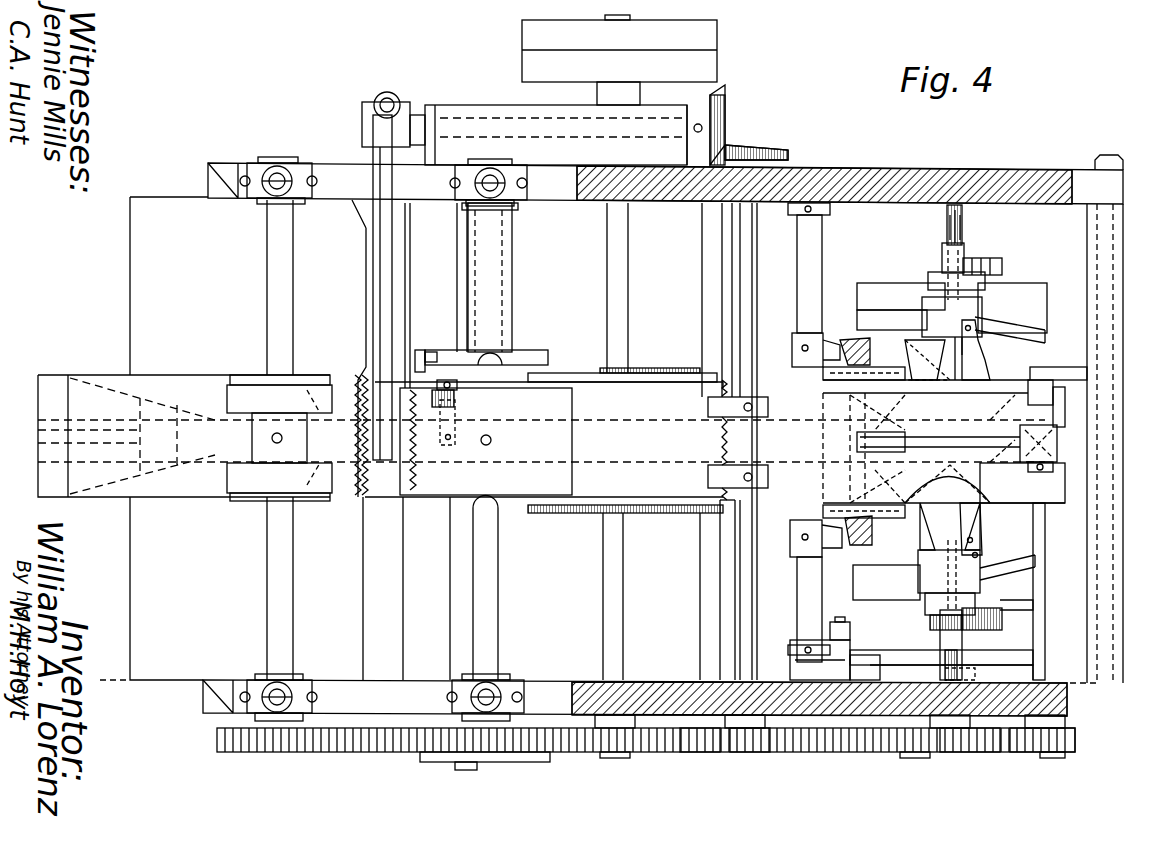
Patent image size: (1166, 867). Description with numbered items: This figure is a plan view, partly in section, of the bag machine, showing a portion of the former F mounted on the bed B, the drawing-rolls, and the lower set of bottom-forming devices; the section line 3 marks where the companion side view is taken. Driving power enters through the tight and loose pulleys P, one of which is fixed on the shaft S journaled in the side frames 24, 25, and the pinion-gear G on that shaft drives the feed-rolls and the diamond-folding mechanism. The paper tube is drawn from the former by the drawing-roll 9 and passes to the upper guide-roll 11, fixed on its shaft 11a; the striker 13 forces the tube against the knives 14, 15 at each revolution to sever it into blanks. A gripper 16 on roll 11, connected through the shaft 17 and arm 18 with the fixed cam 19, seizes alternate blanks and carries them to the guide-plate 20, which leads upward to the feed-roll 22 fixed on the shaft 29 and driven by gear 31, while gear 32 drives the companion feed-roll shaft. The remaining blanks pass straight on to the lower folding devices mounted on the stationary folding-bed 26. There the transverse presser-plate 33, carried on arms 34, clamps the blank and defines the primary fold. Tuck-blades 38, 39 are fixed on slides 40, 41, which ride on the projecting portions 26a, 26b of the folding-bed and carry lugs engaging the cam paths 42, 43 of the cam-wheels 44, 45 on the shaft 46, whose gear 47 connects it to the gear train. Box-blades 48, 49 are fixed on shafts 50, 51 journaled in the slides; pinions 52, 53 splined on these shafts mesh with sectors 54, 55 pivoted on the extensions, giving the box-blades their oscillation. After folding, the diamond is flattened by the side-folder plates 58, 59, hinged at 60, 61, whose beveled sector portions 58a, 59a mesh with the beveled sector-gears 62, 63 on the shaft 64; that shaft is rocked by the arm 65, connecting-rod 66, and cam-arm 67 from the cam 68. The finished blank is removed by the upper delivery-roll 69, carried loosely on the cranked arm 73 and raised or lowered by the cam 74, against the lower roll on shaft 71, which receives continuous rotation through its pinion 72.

The tight and loose pulleys P is at (705, 38).
The shaft S is at (615, 315).
The former F is at (42, 466).
The bed B is at (443, 438).
The pinion-gear G is at (625, 752).
The section line 3 is at (599, 682).
The drawing-roll 9 is at (257, 398).
The guide-roll 11 is at (486, 437).
The shaft 11a is at (486, 530).
The striker 13 is at (380, 273).
The knife 14 is at (366, 500).
The knife 15 is at (357, 500).
The gripper 16 is at (416, 495).
The shaft 17 is at (447, 447).
The arm 18 is at (420, 350).
The cam 19 is at (446, 350).
The guide-plate 20 is at (582, 373).
The feed-roll 22 is at (722, 405).
The side frame 24 is at (222, 700).
The side frame 25 is at (220, 175).
The folding-bed 26 is at (1045, 490).
The projecting portion of folding-bed 26a is at (928, 602).
The projecting portion of folding-bed 26b is at (928, 282).
The shaft 29 is at (737, 530).
The gear 31 is at (745, 752).
The gear 32 is at (715, 752).
The transverse presser-plate 33 is at (930, 390).
The arms 34 is at (905, 530).
The tuck-blade 38 is at (974, 530).
The tuck-blade 39 is at (972, 350).
The slide 40 is at (949, 575).
The slide 41 is at (952, 317).
The cam path 42 is at (860, 578).
The cam path 43 is at (865, 313).
The cam-wheel 44 is at (1015, 610).
The cam-wheel 45 is at (1012, 308).
The shaft 46 is at (962, 212).
The gear 47 is at (975, 752).
The box-blade 48 is at (949, 526).
The box-blade 49 is at (925, 359).
The shaft 50 is at (945, 650).
The shaft 51 is at (948, 228).
The pinion 52 is at (932, 621).
The pinion 53 is at (940, 262).
The sector 54 is at (1002, 620).
The sector 55 is at (1002, 265).
The side-folder plate 58 is at (938, 467).
The beveled sector portion 58a is at (876, 540).
The side-folder plate 59 is at (1018, 440).
The beveled sector portion 59a is at (872, 350).
The hinge 60 is at (823, 511).
The hinge 61 is at (823, 374).
The beveled sector-gear 62 is at (815, 540).
The beveled sector-gear 63 is at (815, 345).
The shaft 64 is at (812, 250).
The arm 65 is at (805, 655).
The connecting-rod 66 is at (835, 622).
The cam-arm 67 is at (860, 655).
The cam 68 is at (1033, 658).
The upper delivery-roll 69 is at (1057, 440).
The shaft 71 is at (1045, 518).
The pinion 72 is at (1037, 752).
The cranked arm 73 is at (1075, 373).
The cam 74 is at (1040, 380).